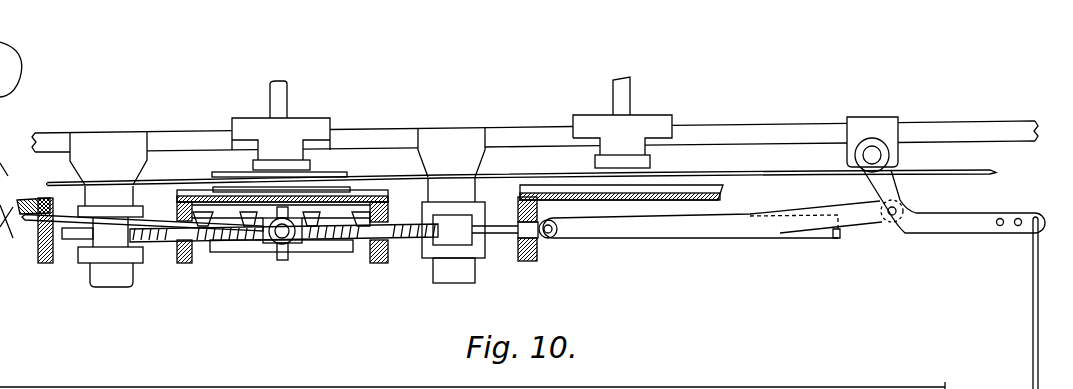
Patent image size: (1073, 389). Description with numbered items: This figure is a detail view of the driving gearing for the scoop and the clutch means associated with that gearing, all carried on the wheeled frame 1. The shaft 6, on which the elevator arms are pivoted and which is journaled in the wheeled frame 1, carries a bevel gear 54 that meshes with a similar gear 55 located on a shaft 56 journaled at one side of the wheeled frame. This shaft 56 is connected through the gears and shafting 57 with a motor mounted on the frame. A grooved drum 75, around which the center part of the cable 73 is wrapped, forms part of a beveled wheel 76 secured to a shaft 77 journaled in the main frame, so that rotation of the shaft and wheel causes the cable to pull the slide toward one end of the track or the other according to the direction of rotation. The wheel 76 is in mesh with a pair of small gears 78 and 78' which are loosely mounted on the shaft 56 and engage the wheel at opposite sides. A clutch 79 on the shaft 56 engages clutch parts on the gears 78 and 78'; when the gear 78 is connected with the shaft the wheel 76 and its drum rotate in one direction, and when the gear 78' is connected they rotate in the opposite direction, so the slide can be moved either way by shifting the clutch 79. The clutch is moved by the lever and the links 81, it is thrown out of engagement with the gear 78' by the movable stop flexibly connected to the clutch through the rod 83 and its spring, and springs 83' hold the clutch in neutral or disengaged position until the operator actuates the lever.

The wheeled frame 1 is at (953, 127).
The shaft 6 is at (623, 93).
The bevel gear 54 is at (700, 206).
The gear 55 is at (530, 261).
The shaft 56 is at (333, 252).
The gears and shafting 57 is at (48, 263).
The cable 73 is at (516, 177).
The grooved drum 75 is at (340, 172).
The beveled wheel 76 is at (202, 190).
The shaft 77 is at (282, 98).
The small gear 78 is at (190, 281).
The small gear 78' is at (391, 277).
The clutch 79 is at (267, 252).
The links 81 is at (952, 225).
The rod 83 is at (102, 291).
The springs 83' is at (340, 281).